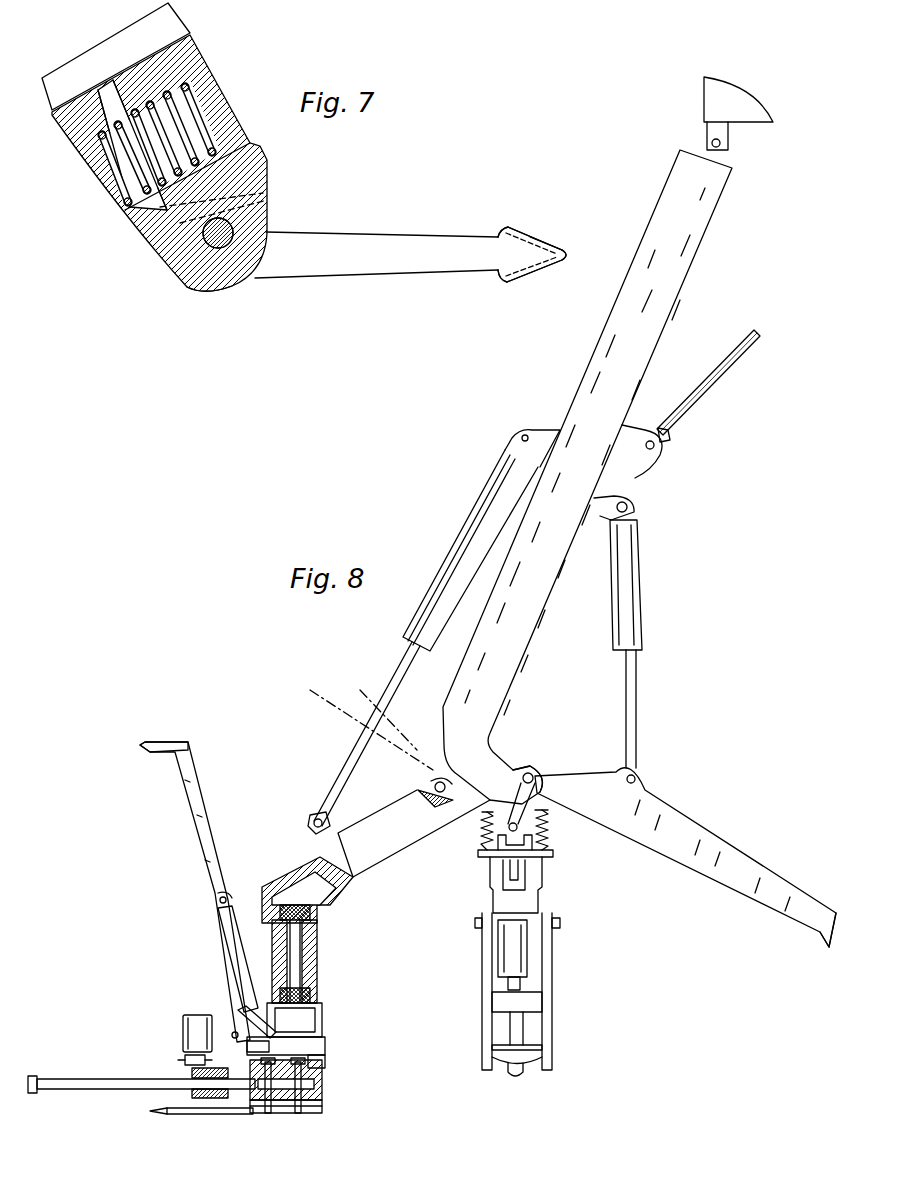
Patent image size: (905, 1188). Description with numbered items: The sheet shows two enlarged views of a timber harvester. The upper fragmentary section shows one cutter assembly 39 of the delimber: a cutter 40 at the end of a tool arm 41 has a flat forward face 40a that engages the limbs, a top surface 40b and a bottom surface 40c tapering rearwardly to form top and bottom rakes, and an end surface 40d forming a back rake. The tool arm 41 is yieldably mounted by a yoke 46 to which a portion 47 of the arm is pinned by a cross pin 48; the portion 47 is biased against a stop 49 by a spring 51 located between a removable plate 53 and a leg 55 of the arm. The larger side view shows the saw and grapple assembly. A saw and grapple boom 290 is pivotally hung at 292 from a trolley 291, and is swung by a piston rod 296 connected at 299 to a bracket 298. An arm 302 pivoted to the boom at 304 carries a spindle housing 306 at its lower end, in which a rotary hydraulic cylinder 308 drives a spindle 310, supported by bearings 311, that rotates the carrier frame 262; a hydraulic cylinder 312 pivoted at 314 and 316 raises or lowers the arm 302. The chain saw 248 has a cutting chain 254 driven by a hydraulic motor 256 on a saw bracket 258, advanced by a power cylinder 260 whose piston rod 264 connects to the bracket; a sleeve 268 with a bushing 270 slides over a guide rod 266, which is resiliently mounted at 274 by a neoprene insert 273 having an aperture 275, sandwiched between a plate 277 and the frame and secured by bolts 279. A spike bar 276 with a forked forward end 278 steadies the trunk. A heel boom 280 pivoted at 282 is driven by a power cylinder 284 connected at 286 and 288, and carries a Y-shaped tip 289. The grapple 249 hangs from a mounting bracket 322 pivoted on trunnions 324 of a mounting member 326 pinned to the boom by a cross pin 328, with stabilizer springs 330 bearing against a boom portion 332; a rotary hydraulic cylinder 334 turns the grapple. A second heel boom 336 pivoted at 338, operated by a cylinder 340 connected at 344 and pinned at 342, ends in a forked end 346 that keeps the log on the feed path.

In FIG. 7, the spring 51 is at (178, 122).
In FIG. 7, the removable plate 53 is at (227, 125).
In FIG. 7, the stop 49 is at (263, 183).
In FIG. 7, the cross pin 48 is at (264, 213).
In FIG. 7, the leg 55 is at (125, 227).
In FIG. 7, the yoke 46 is at (230, 277).
In FIG. 7, the portion of tool arm 47 is at (200, 290).
In FIG. 7, the tool arm 41 is at (338, 237).
In FIG. 7, the cutter assembly 39 is at (392, 216).
In FIG. 7, the cutter 40 is at (553, 236).
In FIG. 7, the flat forward face 40a is at (512, 248).
In FIG. 7, the top surface 40b is at (540, 250).
In FIG. 7, the bottom surface 40c is at (500, 226).
In FIG. 7, the end surface 40d is at (570, 254).
In FIG. 8, the trolley 291 is at (730, 96).
In FIG. 8, the pivotal connection 292 is at (730, 150).
In FIG. 8, the saw and grapple boom 290 is at (610, 342).
In FIG. 8, the piston rod 296 is at (690, 396).
In FIG. 8, the connection 299 is at (665, 445).
In FIG. 8, the bracket 298 is at (640, 461).
In FIG. 8, the pivotal connection 344 is at (636, 508).
In FIG. 8, the cylinder 340 is at (633, 552).
In FIG. 8, the pivotal connection 314 is at (526, 434).
In FIG. 8, the hydraulic cylinder 312 is at (497, 494).
In FIG. 8, the arm 302 is at (312, 718).
In FIG. 8, the pivotal connection 304 is at (434, 788).
In FIG. 8, the pivotal connection 316 is at (317, 815).
In FIG. 8, the Y-shaped tip 289 is at (158, 747).
In FIG. 8, the heel boom 280 is at (190, 823).
In FIG. 8, the connection 288 is at (224, 897).
In FIG. 8, the power cylinder 284 is at (226, 950).
In FIG. 8, the chain saw 248 is at (167, 1003).
In FIG. 8, the hydraulic motor 256 is at (183, 1034).
In FIG. 8, the cutting chain 254 is at (185, 1060).
In FIG. 8, the sleeve 268 is at (192, 1073).
In FIG. 8, the guide rod 266 is at (72, 1089).
In FIG. 8, the bushing 270 is at (192, 1093).
In FIG. 8, the forward end 278 is at (176, 1114).
In FIG. 8, the spike bar 276 is at (206, 1114).
In FIG. 8, the pivotal connection 282 is at (258, 1112).
In FIG. 8, the aperture 275 is at (300, 1112).
In FIG. 8, the plate 277 is at (322, 1104).
In FIG. 8, the neoprene insert 273 is at (325, 1097).
In FIG. 8, the resilient mounting 274 is at (340, 1092).
In FIG. 8, the bolts 279 is at (322, 1065).
In FIG. 8, the power cylinder 260 is at (325, 1047).
In FIG. 8, the carrier frame 262 is at (322, 1020).
In FIG. 8, the piston rod 264 is at (262, 1047).
In FIG. 8, the saw bracket 258 is at (270, 1032).
In FIG. 8, the connection 286 is at (235, 1012).
In FIG. 8, the rotary hydraulic cylinder 308 is at (290, 906).
In FIG. 8, the bearings 311 is at (312, 915).
In FIG. 8, the spindle housing 306 is at (318, 946).
In FIG. 8, the spindle 310 is at (300, 960).
In FIG. 8, the cross pin 328 is at (526, 772).
In FIG. 8, the pivotal connection 338 is at (550, 774).
In FIG. 8, the mounting member 326 is at (532, 800).
In FIG. 8, the pivot pin 342 is at (640, 780).
In FIG. 8, the heel boom 336 is at (680, 835).
In FIG. 8, the forked end 346 is at (826, 940).
In FIG. 8, the portion of the boom 332 is at (490, 814).
In FIG. 8, the trunnions 324 is at (484, 834).
In FIG. 8, the stabilizer springs 330 is at (548, 833).
In FIG. 8, the mounting bracket 322 is at (553, 855).
In FIG. 8, the rotary hydraulic cylinder 334 is at (505, 870).
In FIG. 8, the grapple 249 is at (567, 946).